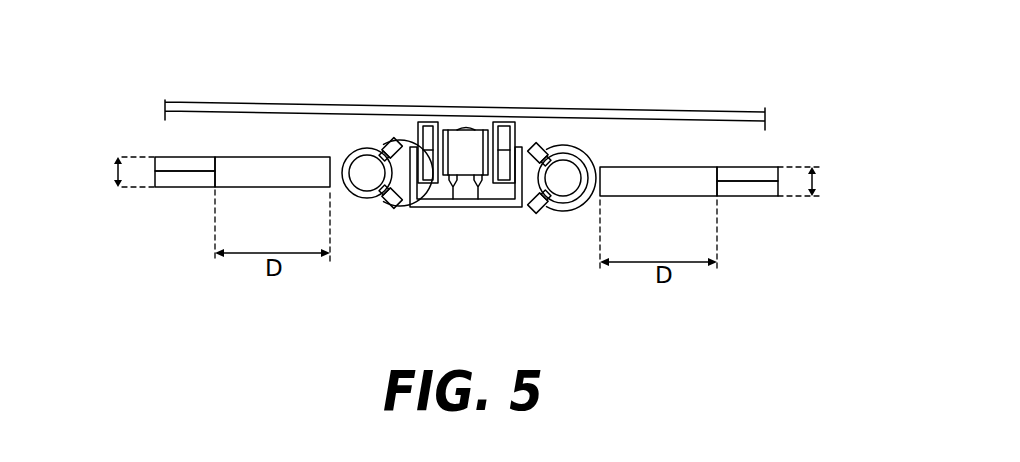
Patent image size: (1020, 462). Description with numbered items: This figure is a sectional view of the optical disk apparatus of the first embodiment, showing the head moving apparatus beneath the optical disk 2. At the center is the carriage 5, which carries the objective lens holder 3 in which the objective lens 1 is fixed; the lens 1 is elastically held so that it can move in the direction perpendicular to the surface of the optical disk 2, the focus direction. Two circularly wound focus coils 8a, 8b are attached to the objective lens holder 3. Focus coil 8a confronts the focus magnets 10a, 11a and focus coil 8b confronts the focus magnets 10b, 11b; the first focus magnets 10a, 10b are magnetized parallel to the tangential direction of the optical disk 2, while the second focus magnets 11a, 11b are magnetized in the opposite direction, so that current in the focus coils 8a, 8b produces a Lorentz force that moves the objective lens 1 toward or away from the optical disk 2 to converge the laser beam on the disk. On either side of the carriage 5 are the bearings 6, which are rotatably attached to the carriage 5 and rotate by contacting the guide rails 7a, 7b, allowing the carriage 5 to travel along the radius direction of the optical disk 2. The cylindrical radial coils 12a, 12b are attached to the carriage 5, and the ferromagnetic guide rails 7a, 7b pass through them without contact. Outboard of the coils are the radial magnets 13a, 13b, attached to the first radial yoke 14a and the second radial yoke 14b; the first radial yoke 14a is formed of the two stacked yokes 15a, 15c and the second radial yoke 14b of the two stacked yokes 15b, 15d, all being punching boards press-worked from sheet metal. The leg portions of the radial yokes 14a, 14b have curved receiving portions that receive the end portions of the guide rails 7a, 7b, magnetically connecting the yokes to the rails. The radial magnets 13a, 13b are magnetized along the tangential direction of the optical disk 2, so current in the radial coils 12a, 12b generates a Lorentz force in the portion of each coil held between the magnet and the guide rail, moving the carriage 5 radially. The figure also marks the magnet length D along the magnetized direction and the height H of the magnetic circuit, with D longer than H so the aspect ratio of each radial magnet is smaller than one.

The objective lens 1 is at (470, 128).
The optical disk 2 is at (648, 113).
The objective lens holder 3 is at (484, 128).
The carriage 5 is at (462, 205).
The bearings 6 is at (388, 146).
The guide rail 7a is at (563, 190).
The guide rail 7b is at (363, 188).
The focus coil 8a is at (488, 130).
The focus coil 8b is at (448, 133).
The first focus magnet 10a is at (503, 128).
The first focus magnet 10b is at (430, 128).
The second focus magnet 11a is at (500, 182).
The second focus magnet 11b is at (432, 178).
The radial coil 12a is at (577, 192).
The radial coil 12b is at (350, 197).
The radial magnet 13a is at (663, 188).
The radial magnet 13b is at (254, 182).
The first radial yoke 14a is at (778, 181).
The second radial yoke 14b is at (153, 170).
The yoke 15a is at (740, 170).
The yoke 15b is at (192, 162).
The yoke 15c is at (753, 198).
The yoke 15d is at (170, 178).